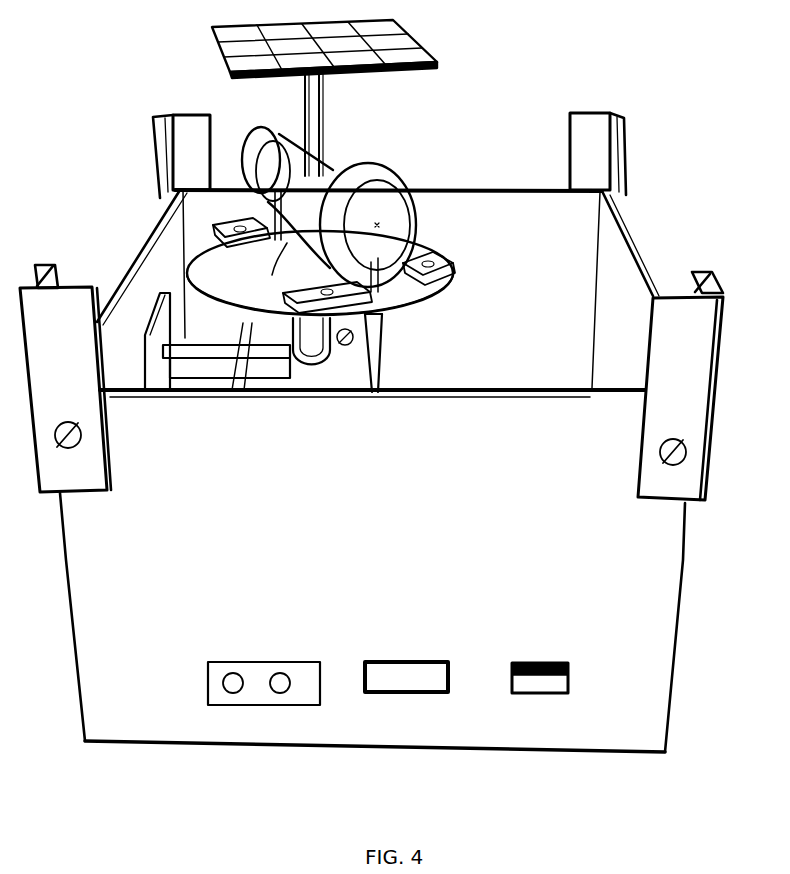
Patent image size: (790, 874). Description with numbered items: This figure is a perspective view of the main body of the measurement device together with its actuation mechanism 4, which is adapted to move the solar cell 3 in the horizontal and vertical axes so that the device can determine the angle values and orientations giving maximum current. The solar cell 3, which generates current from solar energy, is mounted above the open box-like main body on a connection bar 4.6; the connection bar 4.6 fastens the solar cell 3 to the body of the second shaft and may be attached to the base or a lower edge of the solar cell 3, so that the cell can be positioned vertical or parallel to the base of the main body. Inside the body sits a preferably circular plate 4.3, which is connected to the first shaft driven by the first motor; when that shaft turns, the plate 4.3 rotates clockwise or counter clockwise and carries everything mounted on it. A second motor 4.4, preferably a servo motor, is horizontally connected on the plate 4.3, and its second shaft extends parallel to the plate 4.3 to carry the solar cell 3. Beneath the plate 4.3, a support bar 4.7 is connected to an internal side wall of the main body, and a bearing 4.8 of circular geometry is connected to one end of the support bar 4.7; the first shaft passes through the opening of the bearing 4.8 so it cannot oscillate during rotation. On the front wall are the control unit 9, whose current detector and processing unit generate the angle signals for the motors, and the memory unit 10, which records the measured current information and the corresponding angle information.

The actuation mechanism 4 is at (118, 109).
The solar cell 3 is at (433, 53).
The plate 4.3 is at (450, 242).
The second motor 4.4 is at (378, 250).
The connection bar 4.6 is at (325, 100).
The support bar 4.7 is at (167, 293).
The bearing 4.8 is at (380, 378).
The control unit 9 is at (413, 668).
The memory unit 10 is at (540, 665).